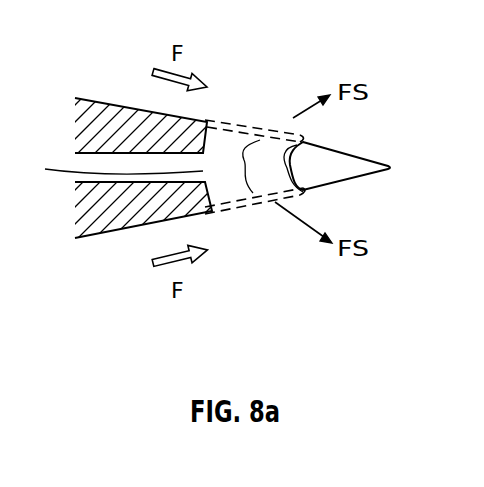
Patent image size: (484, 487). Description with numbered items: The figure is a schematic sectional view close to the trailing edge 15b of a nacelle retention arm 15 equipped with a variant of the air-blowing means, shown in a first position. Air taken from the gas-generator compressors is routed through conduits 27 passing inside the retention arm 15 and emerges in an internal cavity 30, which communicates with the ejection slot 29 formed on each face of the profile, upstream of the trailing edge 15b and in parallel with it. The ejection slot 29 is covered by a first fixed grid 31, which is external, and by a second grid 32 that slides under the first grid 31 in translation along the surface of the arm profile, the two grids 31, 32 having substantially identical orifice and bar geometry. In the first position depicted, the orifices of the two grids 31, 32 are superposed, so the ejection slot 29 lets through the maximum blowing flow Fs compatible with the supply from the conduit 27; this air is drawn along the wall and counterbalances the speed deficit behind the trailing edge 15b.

The retention arm 15 is at (100, 121).
The trailing edge 15b is at (388, 167).
The conduit 27 is at (80, 182).
The ejection slot 29 is at (273, 109).
The internal cavity 30 is at (48, 170).
The first fixed grid 31 is at (236, 121).
The second grid 32 is at (273, 166).